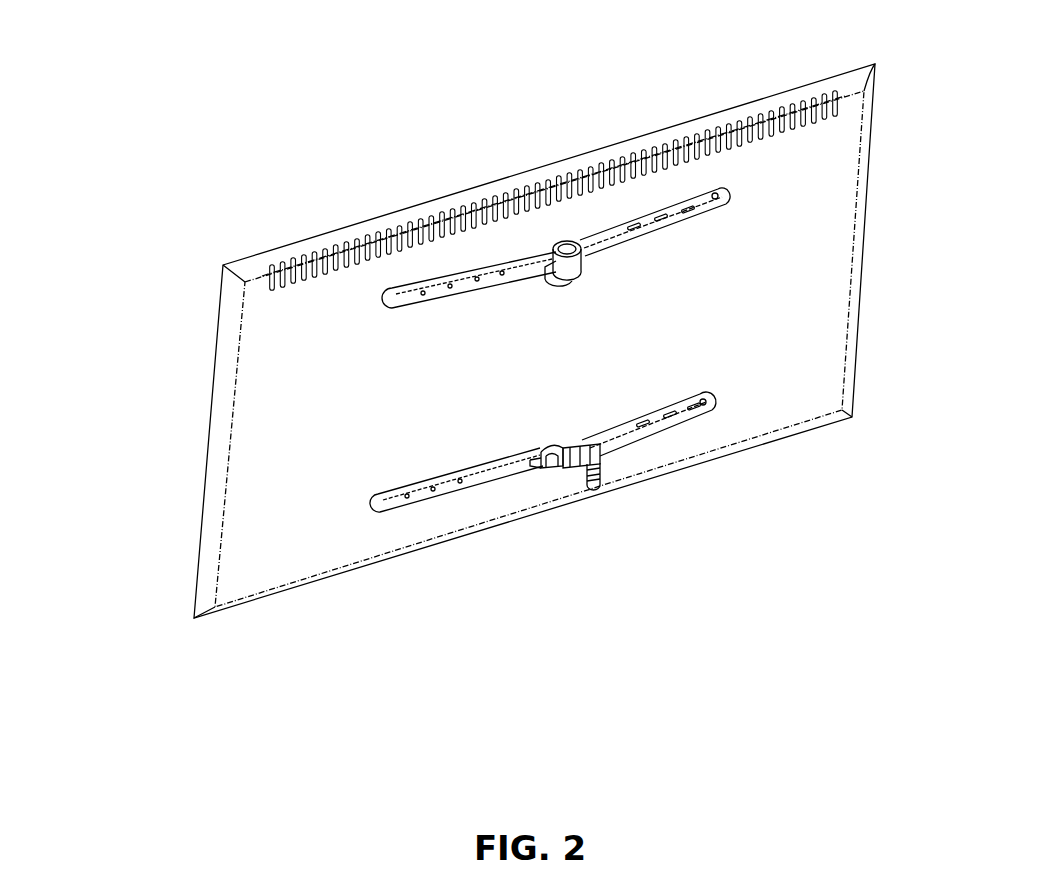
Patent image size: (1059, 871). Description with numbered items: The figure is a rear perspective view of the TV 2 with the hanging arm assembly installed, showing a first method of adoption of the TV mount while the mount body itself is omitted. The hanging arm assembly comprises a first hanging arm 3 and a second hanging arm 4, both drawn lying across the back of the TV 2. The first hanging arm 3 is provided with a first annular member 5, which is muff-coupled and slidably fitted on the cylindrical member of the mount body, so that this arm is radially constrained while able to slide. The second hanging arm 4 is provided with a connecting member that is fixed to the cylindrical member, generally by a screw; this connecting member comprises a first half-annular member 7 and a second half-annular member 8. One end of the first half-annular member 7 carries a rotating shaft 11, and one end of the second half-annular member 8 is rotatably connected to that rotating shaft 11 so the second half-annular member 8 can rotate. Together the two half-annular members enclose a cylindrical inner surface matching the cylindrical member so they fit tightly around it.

The TV 2 is at (200, 536).
The first hanging arm 3 is at (478, 263).
The second hanging arm 4 is at (505, 488).
The first annular member 5 is at (575, 242).
The first half-annular member 7 is at (544, 445).
The second half-annular member 8 is at (603, 460).
The rotating shaft 11 is at (577, 440).